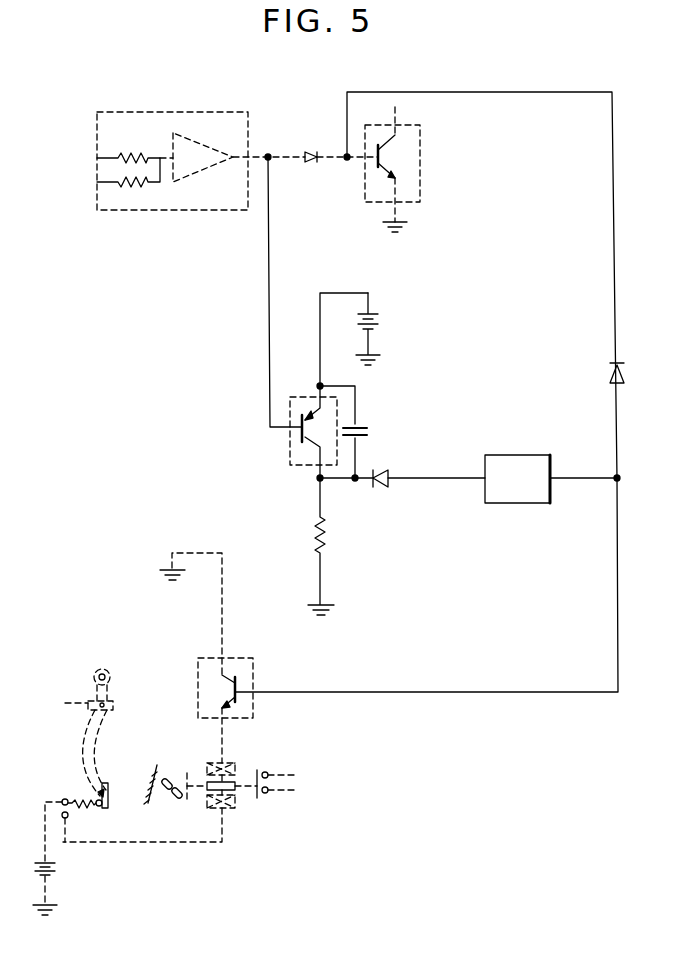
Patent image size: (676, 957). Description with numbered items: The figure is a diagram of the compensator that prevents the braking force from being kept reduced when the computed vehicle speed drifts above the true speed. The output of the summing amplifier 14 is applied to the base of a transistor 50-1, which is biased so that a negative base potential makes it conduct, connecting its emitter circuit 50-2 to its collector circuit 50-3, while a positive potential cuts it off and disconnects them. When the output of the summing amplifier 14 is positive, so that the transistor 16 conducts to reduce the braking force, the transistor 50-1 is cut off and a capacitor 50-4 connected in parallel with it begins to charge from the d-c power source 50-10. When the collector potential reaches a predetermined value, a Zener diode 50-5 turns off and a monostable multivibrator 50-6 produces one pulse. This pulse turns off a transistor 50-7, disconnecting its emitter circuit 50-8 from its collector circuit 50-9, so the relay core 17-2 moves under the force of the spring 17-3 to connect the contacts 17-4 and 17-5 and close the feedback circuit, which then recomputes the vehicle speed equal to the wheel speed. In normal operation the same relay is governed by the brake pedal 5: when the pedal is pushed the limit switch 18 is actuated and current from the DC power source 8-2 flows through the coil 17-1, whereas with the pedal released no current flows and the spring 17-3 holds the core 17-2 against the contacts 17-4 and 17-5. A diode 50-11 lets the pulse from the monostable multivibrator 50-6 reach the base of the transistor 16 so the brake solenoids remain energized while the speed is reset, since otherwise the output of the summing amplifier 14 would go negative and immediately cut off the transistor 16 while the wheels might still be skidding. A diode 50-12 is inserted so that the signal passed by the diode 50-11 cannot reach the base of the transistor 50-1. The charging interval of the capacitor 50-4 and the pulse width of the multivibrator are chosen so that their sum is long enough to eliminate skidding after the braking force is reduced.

The summing amplifier 14 is at (148, 111).
The transistor 16 is at (421, 131).
The brake pedal 5 is at (104, 783).
The limit switch 18 is at (70, 822).
The DC power source 8-2 is at (56, 872).
The coil 17-1 is at (228, 810).
The core 17-2 is at (238, 790).
The spring 17-3 is at (178, 783).
The contact 17-4 is at (270, 793).
The contact 17-5 is at (272, 772).
The transistor 50-1 is at (290, 452).
The emitter circuit 50-2 is at (318, 310).
The collector circuit 50-3 is at (330, 530).
The capacitor 50-4 is at (370, 431).
The Zener diode 50-5 is at (386, 487).
The monostable multivibrator 50-6 is at (517, 455).
The transistor 50-7 is at (255, 660).
The emitter circuit 50-8 is at (225, 732).
The collector circuit 50-9 is at (224, 582).
The d-c power source 50-10 is at (378, 325).
The diode 50-11 is at (610, 372).
The diode 50-12 is at (312, 151).